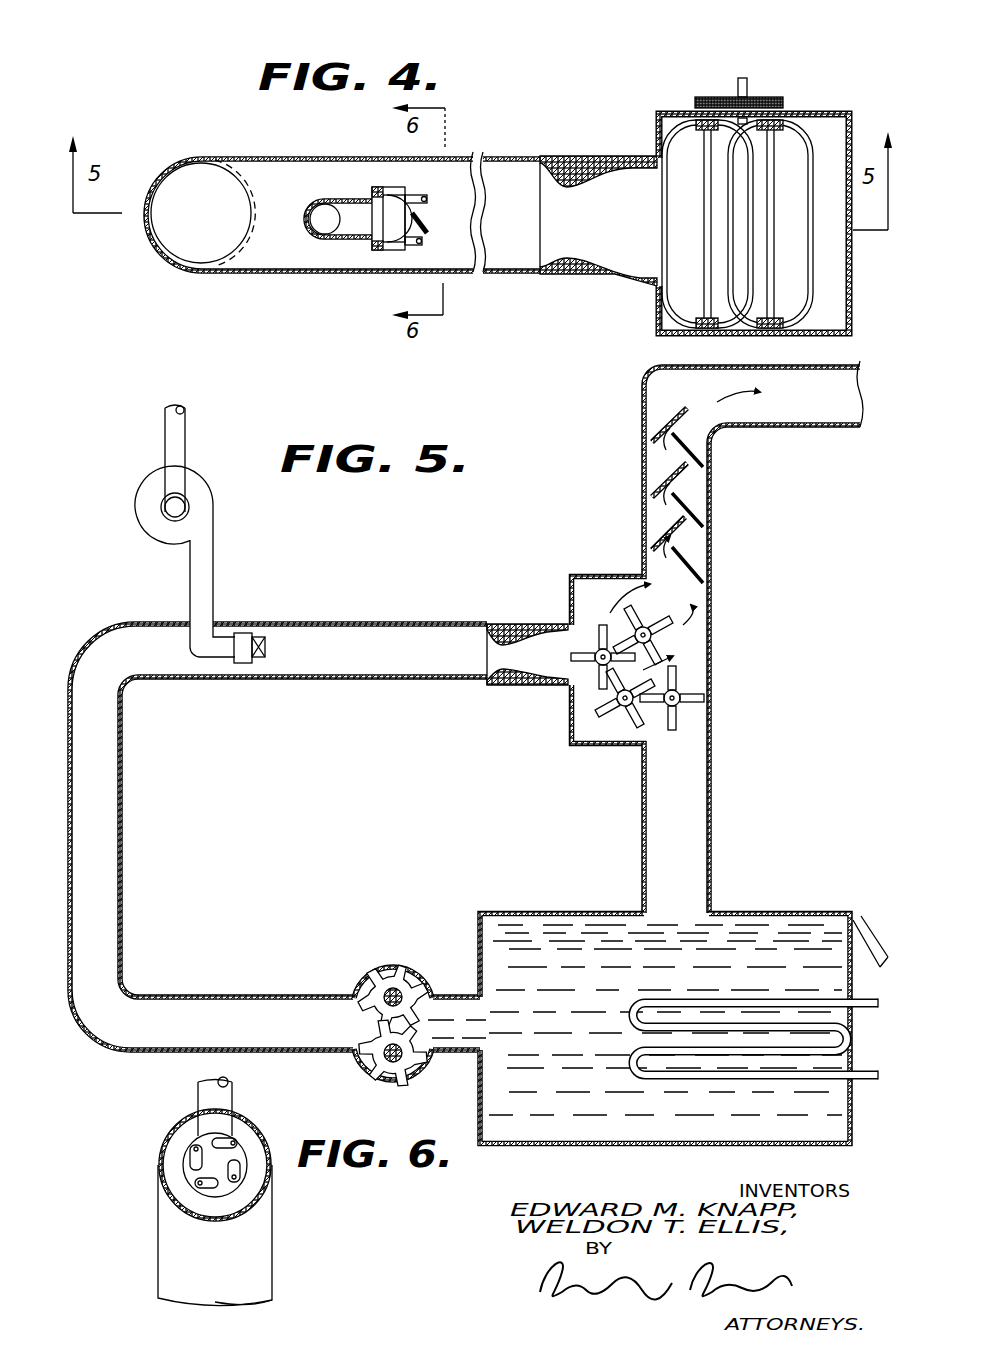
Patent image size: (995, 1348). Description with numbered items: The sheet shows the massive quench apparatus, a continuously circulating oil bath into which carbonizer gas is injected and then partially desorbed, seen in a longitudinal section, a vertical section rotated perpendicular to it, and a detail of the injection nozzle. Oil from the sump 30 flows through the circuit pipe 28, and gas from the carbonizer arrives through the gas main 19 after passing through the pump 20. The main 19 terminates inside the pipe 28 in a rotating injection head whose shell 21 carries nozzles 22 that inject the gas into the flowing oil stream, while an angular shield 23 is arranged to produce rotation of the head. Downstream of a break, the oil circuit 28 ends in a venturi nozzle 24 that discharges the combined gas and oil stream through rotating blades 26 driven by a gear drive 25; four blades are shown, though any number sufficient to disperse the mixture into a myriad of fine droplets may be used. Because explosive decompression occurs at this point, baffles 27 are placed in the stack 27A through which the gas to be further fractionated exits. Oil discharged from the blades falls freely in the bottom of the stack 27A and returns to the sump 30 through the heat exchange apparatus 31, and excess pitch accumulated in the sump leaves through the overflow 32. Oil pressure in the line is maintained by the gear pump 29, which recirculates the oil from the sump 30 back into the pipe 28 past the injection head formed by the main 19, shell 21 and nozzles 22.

In FIG. 4, the gas main 19 is at (327, 212).
In FIG. 5, the gas main 19 is at (181, 443).
In FIG. 6, the gas main 19 is at (232, 1096).
In FIG. 5, the pump 20 is at (200, 510).
In FIG. 4, the rotating head shell 21 is at (407, 193).
In FIG. 5, the rotating head shell 21 is at (249, 648).
In FIG. 6, the rotating head shell 21 is at (238, 1150).
In FIG. 4, the nozzles 22 is at (422, 200).
In FIG. 6, the nozzles 22 is at (247, 1162).
In FIG. 4, the angular shield 23 is at (426, 231).
In FIG. 4, the venturi nozzle 24 is at (557, 190).
In FIG. 4, the gear drive 25 is at (750, 98).
In FIG. 4, the rotating blades 26 is at (683, 130).
In FIG. 5, the rotating blades 26 is at (660, 637).
In FIG. 5, the baffles 27 is at (700, 530).
In FIG. 5, the stack 27A is at (831, 430).
In FIG. 4, the oil circuit pipe 28 is at (212, 183).
In FIG. 5, the oil circuit pipe 28 is at (65, 877).
In FIG. 6, the oil circuit pipe 28 is at (268, 1250).
In FIG. 5, the gear pump 29 is at (420, 962).
In FIG. 5, the sump 30 is at (753, 945).
In FIG. 5, the heat exchange apparatus 31 is at (862, 1080).
In FIG. 5, the overflow 32 is at (862, 940).